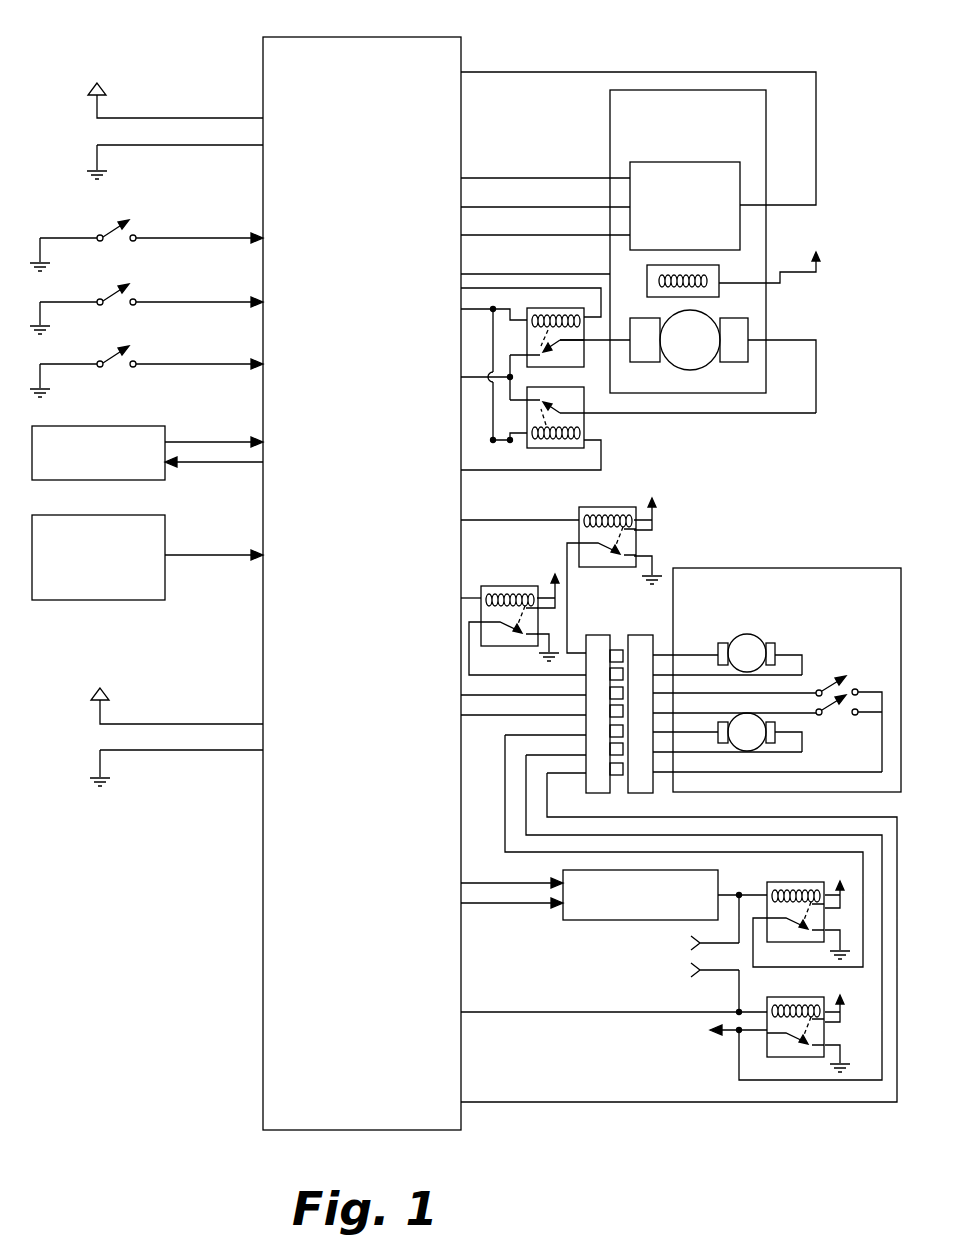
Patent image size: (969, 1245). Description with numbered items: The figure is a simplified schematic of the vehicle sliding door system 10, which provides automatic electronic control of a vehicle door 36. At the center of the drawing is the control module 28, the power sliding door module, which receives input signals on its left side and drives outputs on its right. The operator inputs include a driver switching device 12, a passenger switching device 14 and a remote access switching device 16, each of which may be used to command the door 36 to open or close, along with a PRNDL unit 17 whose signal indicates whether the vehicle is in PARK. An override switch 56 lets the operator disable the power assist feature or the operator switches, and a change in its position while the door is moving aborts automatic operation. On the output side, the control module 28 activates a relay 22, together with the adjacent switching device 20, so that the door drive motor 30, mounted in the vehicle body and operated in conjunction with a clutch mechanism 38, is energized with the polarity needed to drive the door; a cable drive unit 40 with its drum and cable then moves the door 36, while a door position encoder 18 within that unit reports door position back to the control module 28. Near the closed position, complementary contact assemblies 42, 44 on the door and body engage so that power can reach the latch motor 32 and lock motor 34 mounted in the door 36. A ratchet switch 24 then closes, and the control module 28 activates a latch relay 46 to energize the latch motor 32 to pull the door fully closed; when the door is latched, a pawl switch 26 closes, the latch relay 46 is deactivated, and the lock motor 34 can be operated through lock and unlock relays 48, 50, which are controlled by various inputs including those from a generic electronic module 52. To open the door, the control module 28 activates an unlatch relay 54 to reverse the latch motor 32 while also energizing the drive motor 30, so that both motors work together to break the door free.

The vehicle sliding door system 10 is at (500, 25).
The driver switching device 12 is at (144, 290).
The passenger switching device 14 is at (144, 348).
The remote access switching device 16 is at (166, 428).
The PRNDL unit 17 is at (166, 518).
The door position encoder 18 is at (630, 165).
The switching device 20 is at (556, 308).
The close/open relay 22 is at (548, 448).
The ratchet switch 24 is at (852, 680).
The pawl switch 26 is at (867, 701).
The control module 28 is at (262, 607).
The door drive motor 30 is at (750, 319).
The latch motor 32 is at (718, 650).
The lock motor 34 is at (776, 728).
The vehicle door 36 is at (800, 568).
The clutch mechanism 38 is at (783, 285).
The cable drive unit 40 is at (728, 90).
The contact assembly 42 is at (645, 635).
The contact assembly 44 is at (590, 635).
The latch relay 46 is at (519, 586).
The lock relay 48 is at (777, 882).
The unlock relay 50 is at (766, 1044).
The generic electronic module 52 is at (602, 921).
The unlatch relay 54 is at (636, 546).
The override switch 56 is at (144, 211).